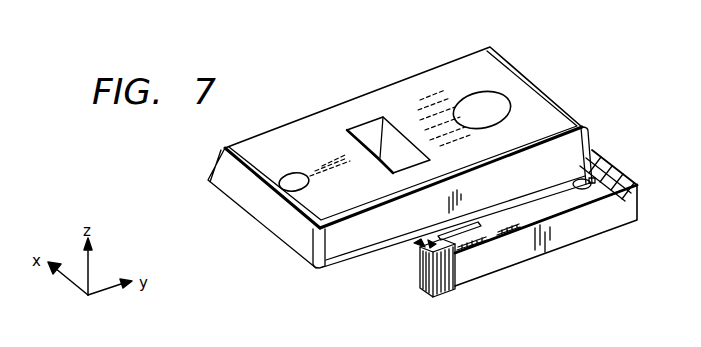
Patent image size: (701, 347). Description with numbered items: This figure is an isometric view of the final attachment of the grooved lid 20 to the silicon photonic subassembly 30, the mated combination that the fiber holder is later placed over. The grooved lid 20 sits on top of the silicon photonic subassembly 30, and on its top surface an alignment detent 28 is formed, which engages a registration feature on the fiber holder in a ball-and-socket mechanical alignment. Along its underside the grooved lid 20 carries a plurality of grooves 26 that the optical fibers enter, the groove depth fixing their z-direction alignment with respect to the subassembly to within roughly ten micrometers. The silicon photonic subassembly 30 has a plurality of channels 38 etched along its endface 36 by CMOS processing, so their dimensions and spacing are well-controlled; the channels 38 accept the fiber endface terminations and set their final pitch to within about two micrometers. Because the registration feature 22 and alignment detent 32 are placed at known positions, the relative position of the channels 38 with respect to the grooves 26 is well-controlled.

The grooved lid 20 is at (352, 92).
The registration feature 22 is at (597, 175).
The grooves 26 is at (354, 262).
The alignment detent 28 is at (288, 182).
The silicon photonic subassembly 30 is at (556, 256).
The alignment detent 32 is at (596, 184).
The endface 36 is at (422, 250).
The channels 38 is at (423, 244).